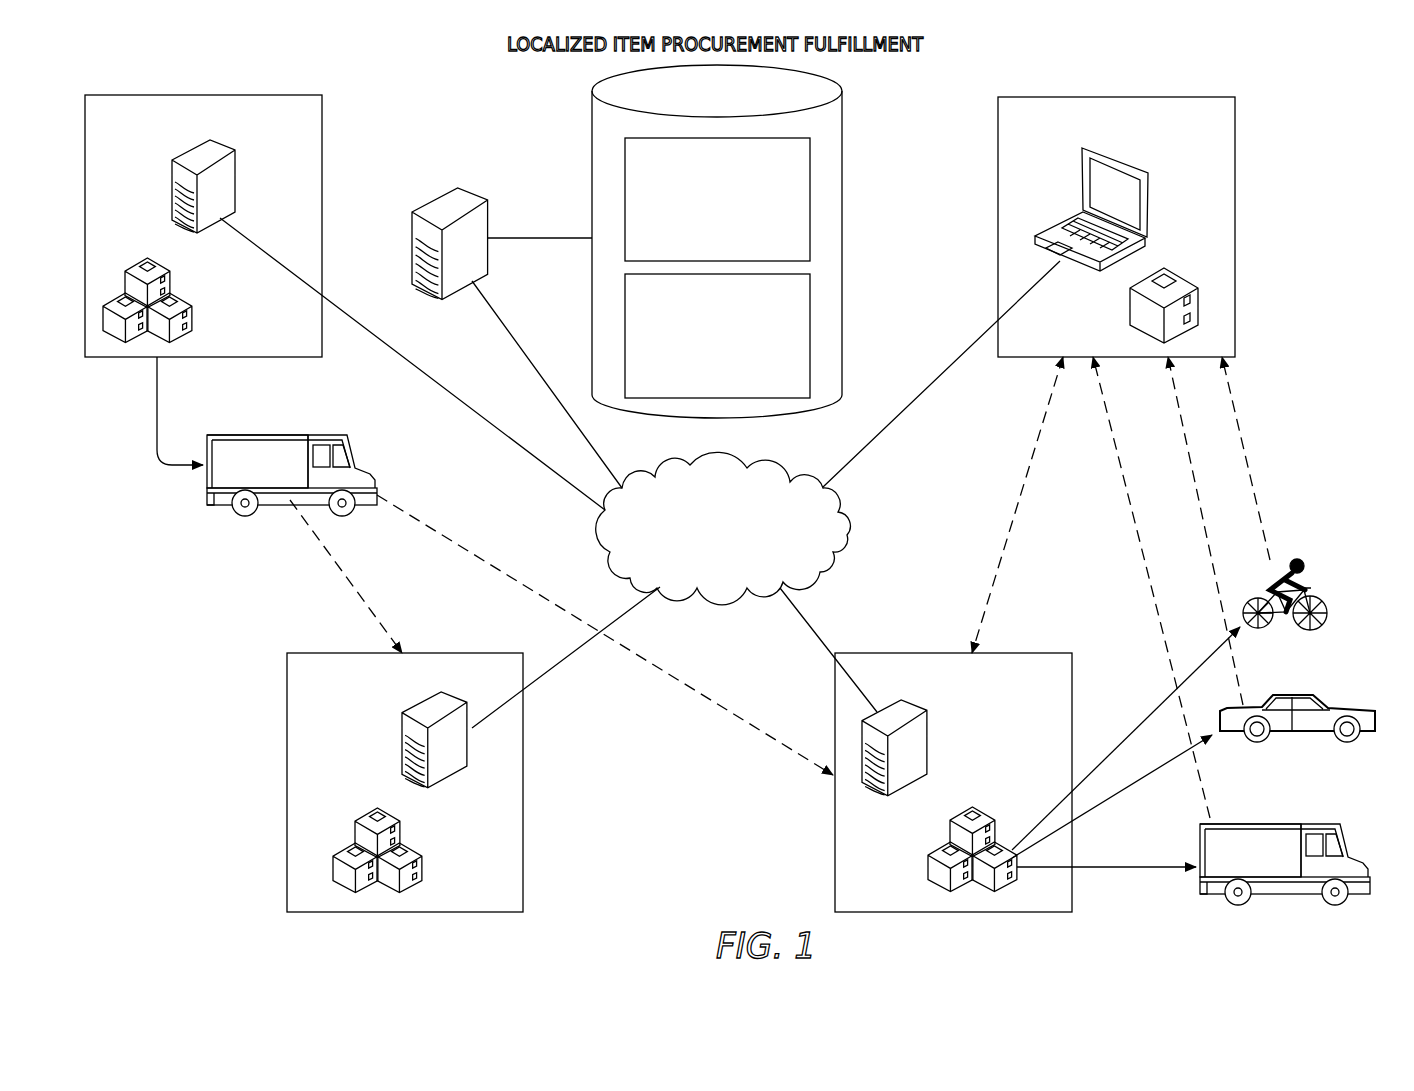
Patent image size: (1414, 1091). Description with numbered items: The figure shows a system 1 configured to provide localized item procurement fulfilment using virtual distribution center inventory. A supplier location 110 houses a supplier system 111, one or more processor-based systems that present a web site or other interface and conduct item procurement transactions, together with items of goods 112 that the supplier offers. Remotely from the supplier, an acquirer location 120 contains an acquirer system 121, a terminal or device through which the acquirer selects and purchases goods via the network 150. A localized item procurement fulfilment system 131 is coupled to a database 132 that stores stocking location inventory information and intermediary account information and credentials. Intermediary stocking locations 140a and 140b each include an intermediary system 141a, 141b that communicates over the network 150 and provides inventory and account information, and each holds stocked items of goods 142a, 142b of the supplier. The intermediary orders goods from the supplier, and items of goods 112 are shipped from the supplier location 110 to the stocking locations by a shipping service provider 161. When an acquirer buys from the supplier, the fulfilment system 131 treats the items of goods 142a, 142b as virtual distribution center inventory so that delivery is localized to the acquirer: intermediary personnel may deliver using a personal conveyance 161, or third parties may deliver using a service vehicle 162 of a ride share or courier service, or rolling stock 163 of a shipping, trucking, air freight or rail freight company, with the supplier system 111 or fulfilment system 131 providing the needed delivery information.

The localized item procurement fulfillment system 1 is at (1348, 69).
The supplier location 110 is at (247, 95).
The supplier system 111 is at (237, 177).
The items of goods 112 is at (175, 282).
The acquirer location 120 is at (1163, 96).
The acquirer system 121 is at (1152, 200).
The localized item procurement fulfilment system 131 is at (481, 192).
The database 132 is at (843, 176).
The intermediary stocking location 140a is at (835, 803).
The intermediary stocking location 140b is at (287, 673).
The intermediary system 141a is at (930, 735).
The intermediary system 141b is at (403, 720).
The items of goods 142a is at (952, 827).
The items of goods 142b is at (402, 828).
The network 150 is at (708, 562).
The shipping service provider 161 is at (282, 433).
The service vehicle 162 is at (1318, 705).
The rolling stock 163 is at (1268, 822).